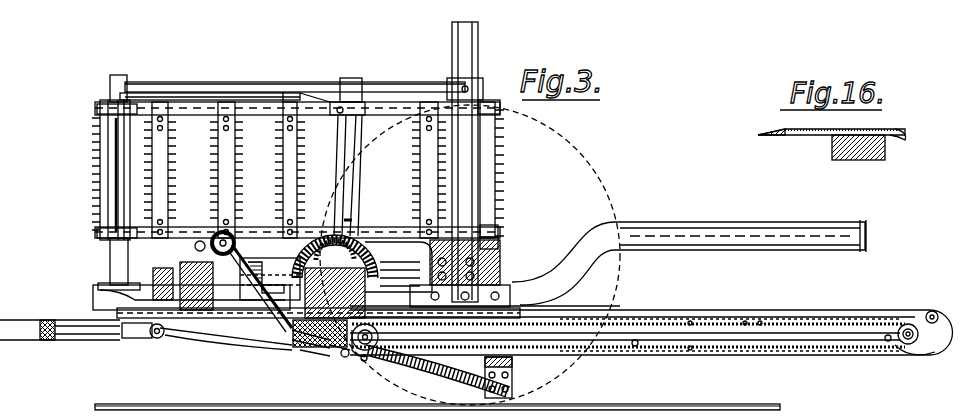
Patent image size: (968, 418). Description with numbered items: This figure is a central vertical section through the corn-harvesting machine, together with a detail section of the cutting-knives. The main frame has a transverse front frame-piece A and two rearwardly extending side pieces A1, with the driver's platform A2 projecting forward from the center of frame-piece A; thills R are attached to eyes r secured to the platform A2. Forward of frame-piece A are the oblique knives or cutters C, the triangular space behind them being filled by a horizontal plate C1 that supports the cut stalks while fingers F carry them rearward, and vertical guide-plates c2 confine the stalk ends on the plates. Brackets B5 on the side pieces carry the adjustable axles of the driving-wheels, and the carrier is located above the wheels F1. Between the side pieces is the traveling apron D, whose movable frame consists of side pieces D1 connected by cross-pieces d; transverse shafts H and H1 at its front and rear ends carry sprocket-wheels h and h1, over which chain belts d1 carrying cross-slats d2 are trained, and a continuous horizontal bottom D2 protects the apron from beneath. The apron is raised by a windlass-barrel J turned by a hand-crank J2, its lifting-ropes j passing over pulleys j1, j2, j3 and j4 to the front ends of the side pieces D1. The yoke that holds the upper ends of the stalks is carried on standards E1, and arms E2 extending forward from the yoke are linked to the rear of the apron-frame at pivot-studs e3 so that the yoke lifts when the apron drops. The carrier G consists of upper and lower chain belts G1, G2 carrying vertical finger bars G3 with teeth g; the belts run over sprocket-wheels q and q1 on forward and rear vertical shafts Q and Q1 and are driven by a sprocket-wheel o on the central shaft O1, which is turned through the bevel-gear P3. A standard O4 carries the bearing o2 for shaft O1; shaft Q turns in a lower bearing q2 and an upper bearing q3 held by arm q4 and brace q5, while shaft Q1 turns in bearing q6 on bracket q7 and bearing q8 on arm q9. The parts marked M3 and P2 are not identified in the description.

In FIG. 3, the traveling carrier-belt G is at (100, 158).
In FIG. 3, the chain belt G1 is at (190, 102).
In FIG. 3, the chain belt G2 is at (205, 235).
In FIG. 3, the finger bar G3 is at (220, 152).
In FIG. 3, the finger g is at (216, 185).
In FIG. 3, the forward vertical shaft Q is at (114, 195).
In FIG. 3, the rear vertical shaft Q1 is at (478, 168).
In FIG. 3, the sprocket-wheel q is at (97, 113).
In FIG. 3, the sprocket-wheel q1 is at (500, 110).
In FIG. 3, the bearing q2 is at (110, 260).
In FIG. 3, the bearing q3 is at (110, 84).
In FIG. 3, the arm q4 is at (245, 90).
In FIG. 3, the brace q5 is at (290, 92).
In FIG. 3, the bearing q6 is at (522, 232).
In FIG. 3, the bracket q7 is at (500, 248).
In FIG. 3, the bearing q8 is at (480, 82).
In FIG. 3, the arm q9 is at (420, 84).
In FIG. 3, the sprocket-wheel o is at (338, 112).
In FIG. 3, the bearing o2 is at (345, 80).
In FIG. 3, the vertical shaft O1 is at (348, 192).
In FIG. 3, the standard O4 is at (350, 160).
In FIG. 3, the supporting-standard E1 is at (470, 50).
In FIG. 3, the arm E2 is at (555, 306).
In FIG. 3, the frame-piece A is at (320, 333).
In FIG. 16, the frame-piece A is at (888, 145).
In FIG. 3, the side piece A1 is at (93, 292).
In FIG. 3, the platform A2 is at (178, 300).
In FIG. 3, the thill R is at (45, 322).
In FIG. 3, the eye r is at (150, 337).
In FIG. 3, the knife C is at (220, 340).
In FIG. 16, the knife C is at (762, 132).
In FIG. 3, the horizontal plate C1 is at (262, 344).
In FIG. 16, the horizontal plate C1 is at (892, 128).
In FIG. 3, the vertical guide-plate c2 is at (273, 278).
In FIG. 3, the windlass-barrel J is at (210, 244).
In FIG. 3, the hand-crank J2 is at (195, 248).
In FIG. 3, the lifting-rope j is at (270, 280).
In FIG. 3, the pulley j1 is at (290, 348).
In FIG. 3, the pulley j2 is at (296, 352).
In FIG. 3, the pulley j3 is at (305, 356).
In FIG. 3, the pulley j4 is at (338, 352).
In FIG. 3, the sprocket-wheel h is at (343, 356).
In FIG. 3, the transverse shaft H is at (355, 352).
In FIG. 3, the transverse shaft H1 is at (915, 352).
In FIG. 3, the sprocket-wheel h1 is at (920, 334).
In FIG. 3, the cross-piece d is at (365, 362).
In FIG. 3, the chain belt d1 is at (690, 320).
In FIG. 3, the cross-slat d2 is at (760, 320).
In FIG. 3, the traveling apron D is at (803, 318).
In FIG. 3, the side piece D1 is at (650, 318).
In FIG. 3, the horizontal bottom D2 is at (780, 350).
In FIG. 3, the pivot-stud e3 is at (933, 311).
In FIG. 3, the toothed arc M3 is at (430, 378).
In FIG. 3, the sprocket P2 is at (360, 245).
In FIG. 3, the bevel-gear P3 is at (310, 265).
In FIG. 3, the finger F is at (264, 279).
In FIG. 3, the wheel F1 is at (398, 267).
In FIG. 3, the bracket B5 is at (500, 262).